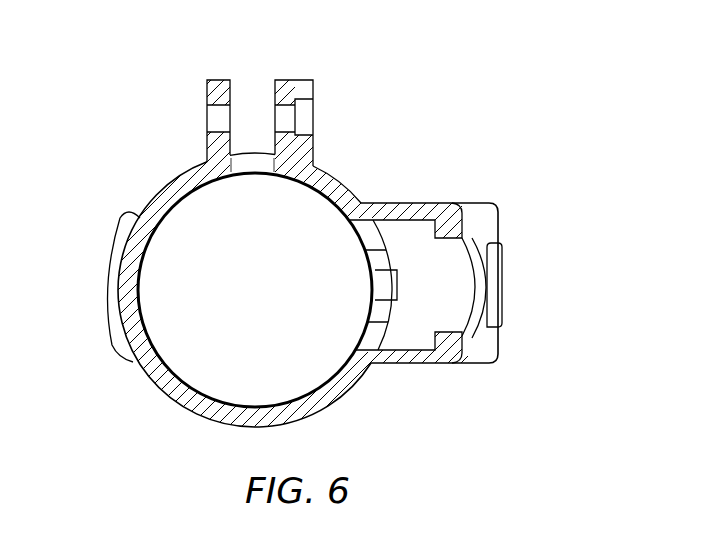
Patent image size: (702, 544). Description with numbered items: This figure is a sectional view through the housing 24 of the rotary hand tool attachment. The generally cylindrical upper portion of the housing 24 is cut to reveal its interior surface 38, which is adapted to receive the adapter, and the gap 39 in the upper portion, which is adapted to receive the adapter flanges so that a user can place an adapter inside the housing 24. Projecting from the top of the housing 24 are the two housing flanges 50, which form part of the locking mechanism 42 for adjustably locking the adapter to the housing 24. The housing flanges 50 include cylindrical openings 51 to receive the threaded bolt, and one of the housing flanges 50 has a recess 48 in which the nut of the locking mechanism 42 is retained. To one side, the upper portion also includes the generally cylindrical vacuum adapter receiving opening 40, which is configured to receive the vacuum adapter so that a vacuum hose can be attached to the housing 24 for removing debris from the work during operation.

The housing 24 is at (456, 237).
The interior surface 38 is at (206, 180).
The gap 39 is at (257, 158).
The vacuum adapter receiving opening 40 is at (478, 302).
The locking mechanism 42 is at (267, 101).
The recess 48 is at (300, 108).
The housing flanges 50 is at (218, 92).
The cylindrical openings 51 is at (218, 118).